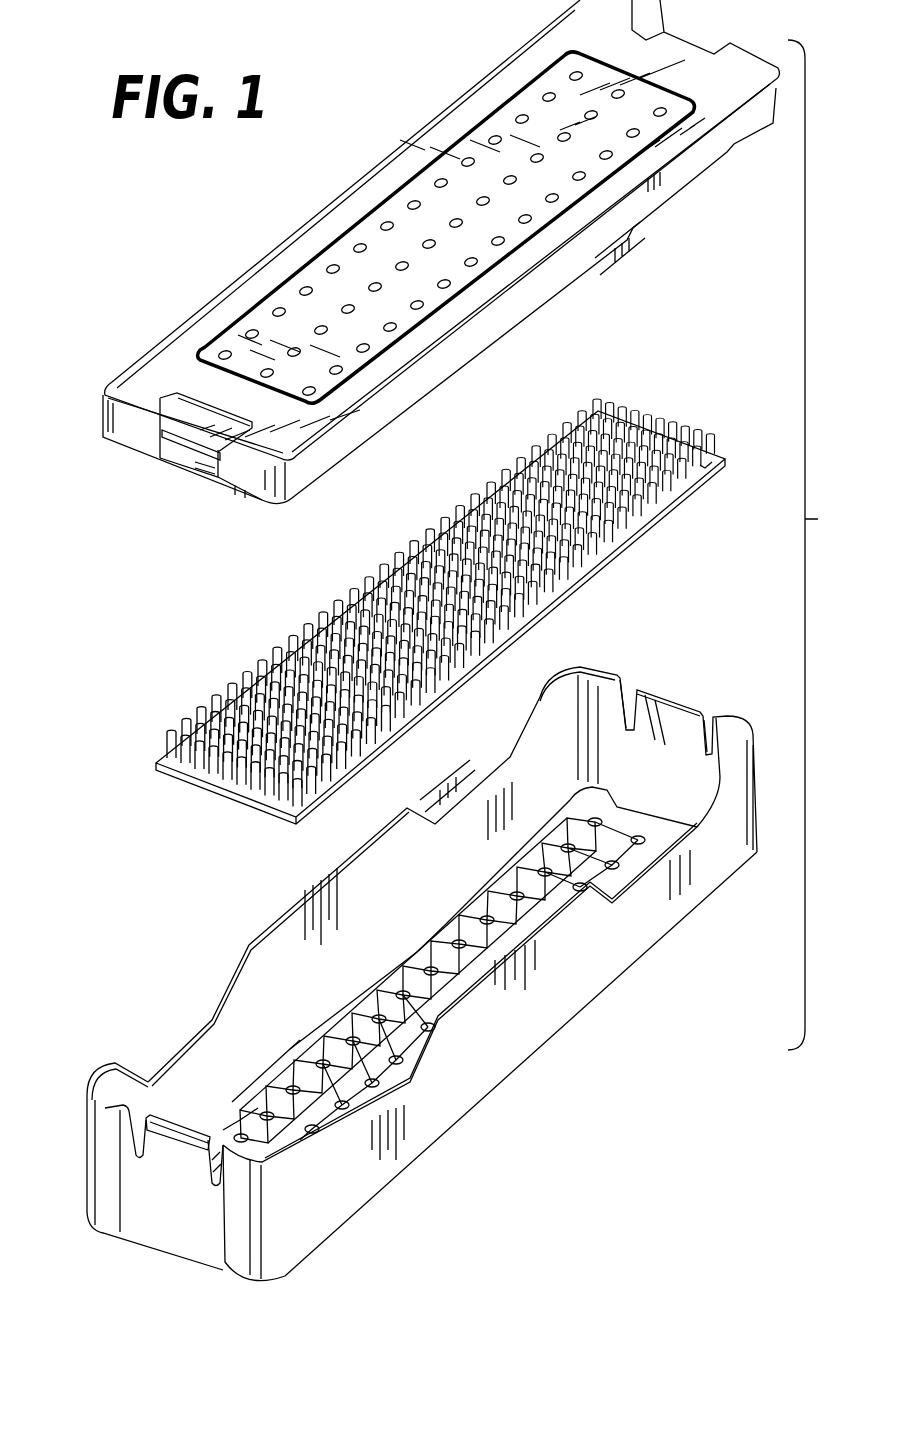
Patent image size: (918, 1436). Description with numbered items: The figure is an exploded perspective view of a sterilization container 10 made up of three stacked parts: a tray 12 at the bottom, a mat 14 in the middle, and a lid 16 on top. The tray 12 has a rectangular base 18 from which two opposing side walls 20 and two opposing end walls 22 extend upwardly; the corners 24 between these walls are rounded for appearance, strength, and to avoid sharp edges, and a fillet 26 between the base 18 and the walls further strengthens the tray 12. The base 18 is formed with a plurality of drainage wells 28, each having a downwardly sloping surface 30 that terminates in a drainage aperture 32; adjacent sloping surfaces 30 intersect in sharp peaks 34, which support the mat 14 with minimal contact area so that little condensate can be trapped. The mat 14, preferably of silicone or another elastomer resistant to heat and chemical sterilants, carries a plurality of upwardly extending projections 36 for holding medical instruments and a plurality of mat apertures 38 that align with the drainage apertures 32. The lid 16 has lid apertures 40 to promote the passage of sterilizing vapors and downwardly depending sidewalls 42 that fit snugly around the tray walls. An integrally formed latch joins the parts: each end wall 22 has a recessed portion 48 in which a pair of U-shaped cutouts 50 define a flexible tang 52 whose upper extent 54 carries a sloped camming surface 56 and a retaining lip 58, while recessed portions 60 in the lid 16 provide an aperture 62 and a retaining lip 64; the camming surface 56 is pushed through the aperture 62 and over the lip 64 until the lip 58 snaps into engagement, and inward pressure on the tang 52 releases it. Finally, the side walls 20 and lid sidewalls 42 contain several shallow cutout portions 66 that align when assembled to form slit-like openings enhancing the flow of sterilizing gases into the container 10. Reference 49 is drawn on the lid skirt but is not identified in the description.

The sterilization container 10 is at (820, 545).
The tray 12 is at (390, 937).
The mat 14 is at (440, 613).
The lid 16 is at (441, 303).
The rectangular base 18 is at (437, 895).
The side walls 20 is at (370, 903).
The end walls 22 is at (390, 936).
The corners 24 is at (275, 1262).
The fillet 26 is at (438, 965).
The drainage wells 28 is at (217, 1115).
The downwardly sloping surface 30 is at (253, 1101).
The drainage aperture 32 is at (317, 1063).
The peaks 34 is at (335, 1049).
The projections 36 is at (633, 418).
The mat apertures 38 is at (672, 460).
The lid apertures 40 is at (279, 304).
The lid sidewalls 42 is at (540, 298).
The recessed portion 48 is at (163, 1218).
The lid skirt 49 is at (232, 487).
The U-shaped cutouts 50 is at (625, 705).
The flexible tang 52 is at (652, 700).
The upper extent 54 is at (672, 706).
The sloped camming surface 56 is at (163, 1130).
The retaining lip 58 is at (205, 1165).
The recessed portions 60 is at (195, 413).
The aperture 62 is at (215, 440).
The retaining lip 64 is at (178, 442).
The cutout portions 66 is at (628, 232).